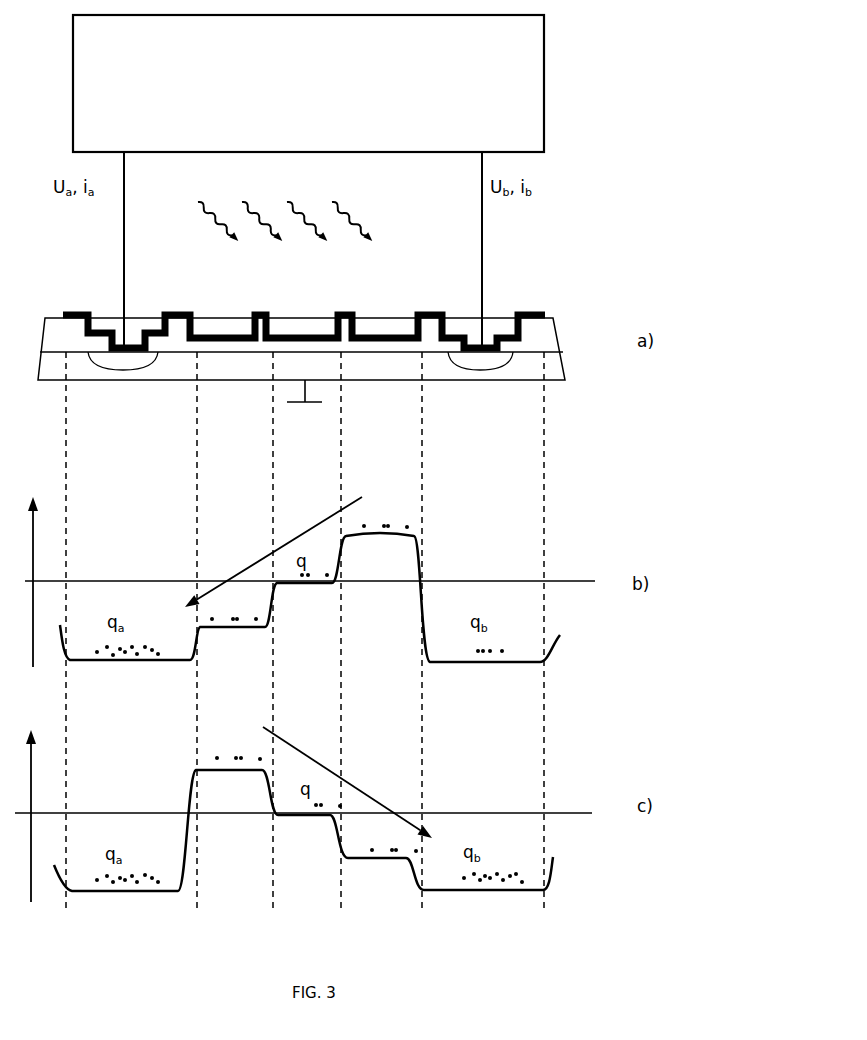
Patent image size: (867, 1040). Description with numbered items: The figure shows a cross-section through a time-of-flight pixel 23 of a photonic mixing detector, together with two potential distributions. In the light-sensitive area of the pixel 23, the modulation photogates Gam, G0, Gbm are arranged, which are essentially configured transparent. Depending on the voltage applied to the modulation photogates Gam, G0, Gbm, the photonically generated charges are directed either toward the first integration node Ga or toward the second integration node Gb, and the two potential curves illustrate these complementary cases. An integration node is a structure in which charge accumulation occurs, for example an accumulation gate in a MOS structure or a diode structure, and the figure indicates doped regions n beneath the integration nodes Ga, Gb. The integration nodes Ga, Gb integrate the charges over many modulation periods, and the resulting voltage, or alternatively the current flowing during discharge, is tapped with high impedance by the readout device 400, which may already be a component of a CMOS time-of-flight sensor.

The time-of-flight pixel 23 is at (673, 90).
The readout device 400 is at (308, 83).
The n-doped regions n is at (300, 362).
The first integration node Ga is at (98, 313).
The modulation photogate Gam is at (232, 322).
The modulation photogate G0 is at (308, 325).
The modulation photogate Gbm is at (392, 322).
The second integration node Gb is at (523, 303).